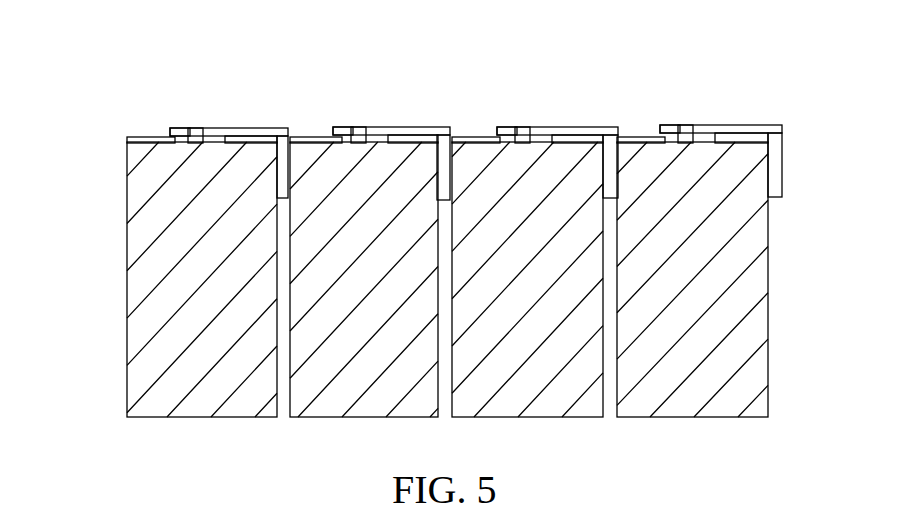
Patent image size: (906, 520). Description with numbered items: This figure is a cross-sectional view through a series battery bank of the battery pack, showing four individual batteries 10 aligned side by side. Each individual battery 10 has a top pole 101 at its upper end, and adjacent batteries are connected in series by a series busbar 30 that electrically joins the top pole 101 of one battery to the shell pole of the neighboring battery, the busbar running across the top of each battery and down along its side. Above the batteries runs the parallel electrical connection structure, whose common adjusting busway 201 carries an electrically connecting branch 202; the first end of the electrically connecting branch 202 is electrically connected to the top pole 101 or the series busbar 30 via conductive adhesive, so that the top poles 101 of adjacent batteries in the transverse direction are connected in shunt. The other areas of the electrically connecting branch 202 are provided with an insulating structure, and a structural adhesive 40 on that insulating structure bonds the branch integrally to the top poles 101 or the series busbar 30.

The individual battery 10 is at (713, 285).
The series busbar 30 is at (735, 128).
The structural adhesive 40 is at (782, 180).
The top pole 101 is at (372, 128).
The common adjusting busway 201 is at (168, 138).
The electrically connecting branch 202 is at (170, 133).